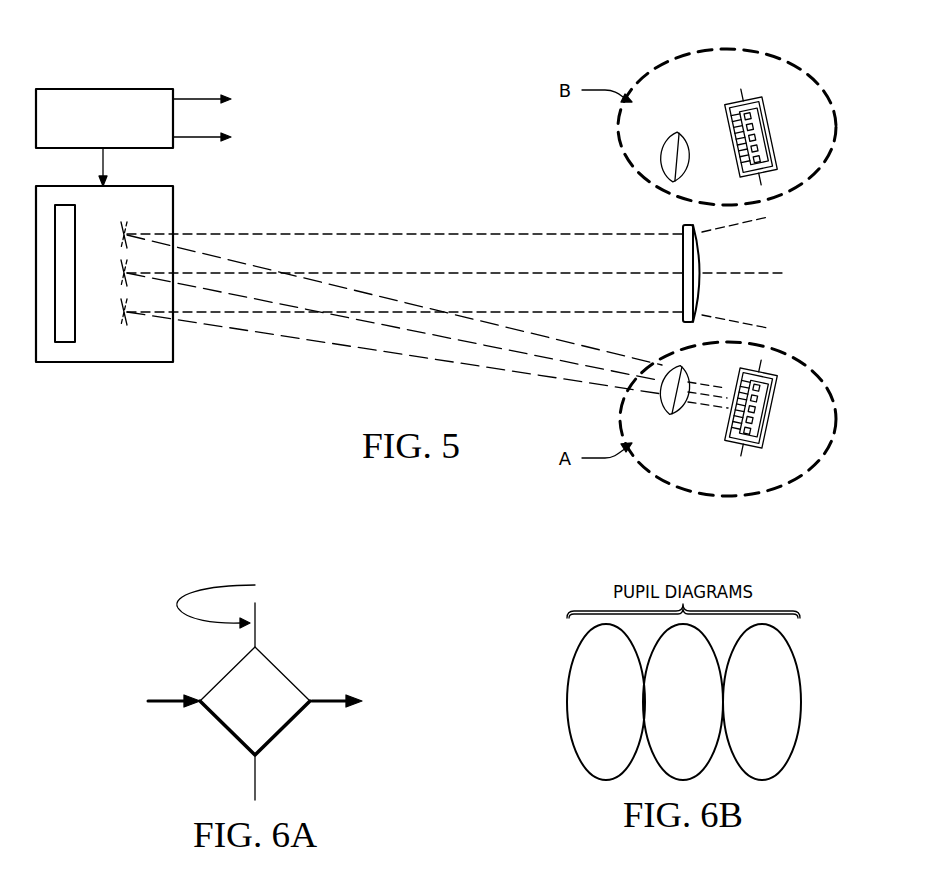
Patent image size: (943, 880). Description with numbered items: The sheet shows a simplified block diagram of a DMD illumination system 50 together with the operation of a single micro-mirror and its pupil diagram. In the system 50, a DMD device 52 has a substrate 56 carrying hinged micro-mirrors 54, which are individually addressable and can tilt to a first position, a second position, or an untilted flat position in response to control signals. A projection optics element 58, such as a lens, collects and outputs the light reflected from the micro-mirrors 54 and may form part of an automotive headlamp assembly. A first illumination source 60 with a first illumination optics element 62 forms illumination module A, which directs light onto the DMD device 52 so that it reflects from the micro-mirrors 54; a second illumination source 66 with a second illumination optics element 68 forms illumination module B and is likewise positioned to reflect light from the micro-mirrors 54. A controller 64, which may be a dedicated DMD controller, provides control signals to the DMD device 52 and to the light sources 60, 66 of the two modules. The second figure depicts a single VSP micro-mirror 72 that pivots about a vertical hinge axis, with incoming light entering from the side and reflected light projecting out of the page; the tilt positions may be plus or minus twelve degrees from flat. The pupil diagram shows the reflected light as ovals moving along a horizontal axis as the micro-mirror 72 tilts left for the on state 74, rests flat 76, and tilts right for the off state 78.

In FIG. 5, the system 50 is at (297, 55).
In FIG. 5, the DMD device 52 is at (93, 368).
In FIG. 5, the micro-mirrors 54 is at (120, 273).
In FIG. 5, the substrate 56 is at (76, 274).
In FIG. 5, the projection optics element 58 is at (702, 262).
In FIG. 5, the first illumination source 60 is at (777, 415).
In FIG. 5, the first illumination optics element 62 is at (671, 412).
In FIG. 5, the controller 64 is at (84, 89).
In FIG. 5, the second illumination source 66 is at (777, 130).
In FIG. 5, the second illumination optics element 68 is at (672, 134).
In FIG. 6A, the micro-mirror 72 is at (243, 714).
In FIG. 6B, the on-state light oval 74 is at (594, 733).
In FIG. 6B, the flat-state light oval 76 is at (671, 733).
In FIG. 6B, the off-state light oval 78 is at (750, 733).